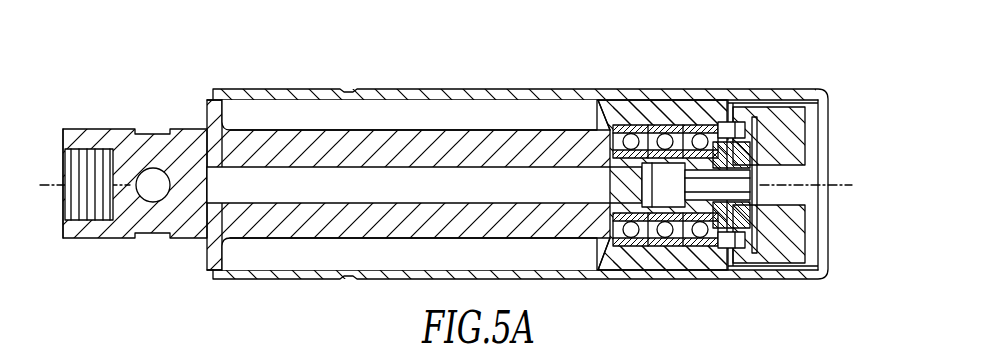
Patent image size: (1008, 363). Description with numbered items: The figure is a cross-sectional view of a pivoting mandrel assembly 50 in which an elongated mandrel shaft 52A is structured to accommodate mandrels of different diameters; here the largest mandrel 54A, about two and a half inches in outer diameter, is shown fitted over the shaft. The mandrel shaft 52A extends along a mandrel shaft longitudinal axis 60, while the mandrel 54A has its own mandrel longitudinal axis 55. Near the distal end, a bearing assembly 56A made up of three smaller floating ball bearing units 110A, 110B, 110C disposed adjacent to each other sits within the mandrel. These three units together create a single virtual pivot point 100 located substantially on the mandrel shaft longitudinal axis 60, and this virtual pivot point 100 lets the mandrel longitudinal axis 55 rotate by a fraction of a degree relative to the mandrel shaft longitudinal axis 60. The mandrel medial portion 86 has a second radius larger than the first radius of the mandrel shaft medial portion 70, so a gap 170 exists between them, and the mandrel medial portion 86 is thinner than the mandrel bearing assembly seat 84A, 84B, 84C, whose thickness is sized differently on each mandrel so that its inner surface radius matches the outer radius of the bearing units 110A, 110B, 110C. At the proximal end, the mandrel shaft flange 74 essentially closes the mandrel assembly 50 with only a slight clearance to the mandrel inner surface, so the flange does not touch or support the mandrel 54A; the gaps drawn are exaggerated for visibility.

The mandrel assembly 50 is at (549, 74).
The mandrel shaft 52A is at (154, 132).
The mandrel 54A is at (384, 88).
The mandrel longitudinal axis 55 is at (47, 180).
The bearing assembly 56A is at (702, 83).
The mandrel shaft longitudinal axis 60 is at (47, 193).
The mandrel shaft medial portion 70 is at (378, 132).
The mandrel shaft flange 74 is at (207, 118).
The mandrel bearing assembly seat 84A is at (611, 124).
The mandrel bearing assembly seat 84B is at (668, 246).
The mandrel bearing assembly seat 84C is at (690, 106).
The mandrel medial portion 86 is at (449, 88).
The virtual pivot point 100 is at (663, 192).
The floating ball bearing unit 110A is at (630, 246).
The floating ball bearing unit 110B is at (648, 124).
The floating ball bearing unit 110C is at (707, 250).
The gap 170 is at (318, 253).